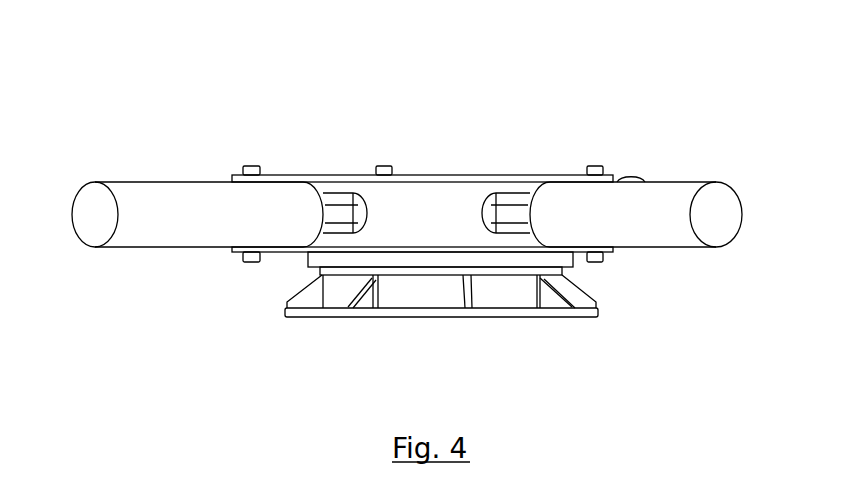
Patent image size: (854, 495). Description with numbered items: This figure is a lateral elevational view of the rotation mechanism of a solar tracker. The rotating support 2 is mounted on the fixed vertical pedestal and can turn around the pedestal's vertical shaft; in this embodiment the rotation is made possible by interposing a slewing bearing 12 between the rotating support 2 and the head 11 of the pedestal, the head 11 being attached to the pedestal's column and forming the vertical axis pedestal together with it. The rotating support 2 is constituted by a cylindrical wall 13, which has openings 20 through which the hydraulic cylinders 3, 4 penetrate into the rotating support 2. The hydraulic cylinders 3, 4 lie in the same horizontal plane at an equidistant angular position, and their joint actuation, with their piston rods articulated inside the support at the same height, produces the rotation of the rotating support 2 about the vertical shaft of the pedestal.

The rotating support 2 is at (515, 154).
The hydraulic cylinder 3 is at (136, 200).
The hydraulic cylinder 4 is at (668, 203).
The head 11 is at (508, 292).
The slewing bearing 12 is at (350, 257).
The cylindrical wall 13 is at (431, 203).
The opening 20 is at (333, 195).